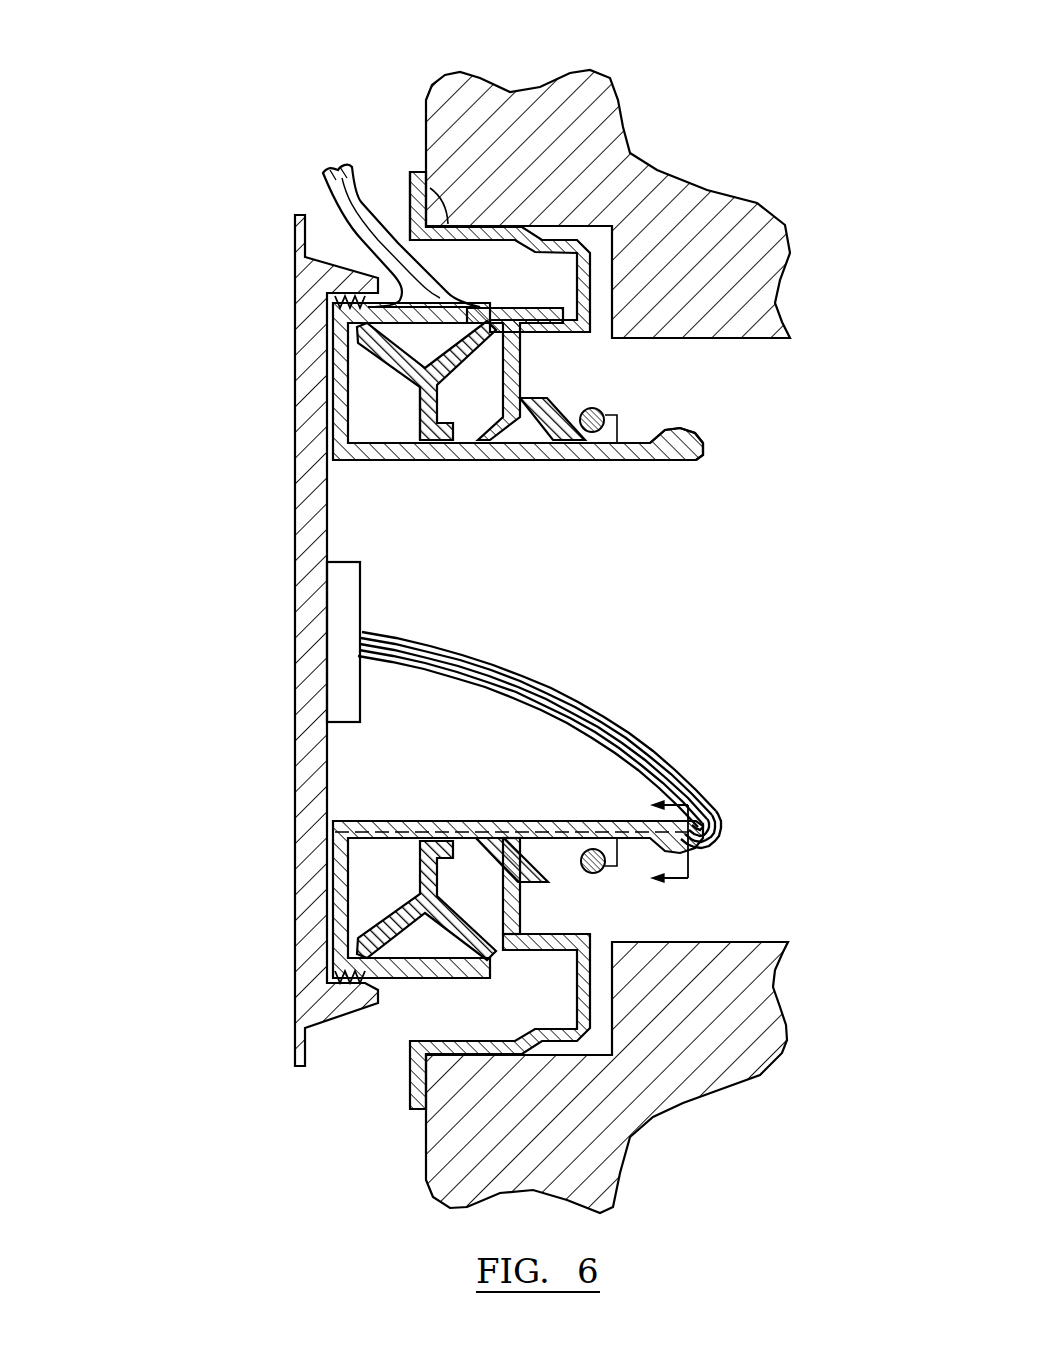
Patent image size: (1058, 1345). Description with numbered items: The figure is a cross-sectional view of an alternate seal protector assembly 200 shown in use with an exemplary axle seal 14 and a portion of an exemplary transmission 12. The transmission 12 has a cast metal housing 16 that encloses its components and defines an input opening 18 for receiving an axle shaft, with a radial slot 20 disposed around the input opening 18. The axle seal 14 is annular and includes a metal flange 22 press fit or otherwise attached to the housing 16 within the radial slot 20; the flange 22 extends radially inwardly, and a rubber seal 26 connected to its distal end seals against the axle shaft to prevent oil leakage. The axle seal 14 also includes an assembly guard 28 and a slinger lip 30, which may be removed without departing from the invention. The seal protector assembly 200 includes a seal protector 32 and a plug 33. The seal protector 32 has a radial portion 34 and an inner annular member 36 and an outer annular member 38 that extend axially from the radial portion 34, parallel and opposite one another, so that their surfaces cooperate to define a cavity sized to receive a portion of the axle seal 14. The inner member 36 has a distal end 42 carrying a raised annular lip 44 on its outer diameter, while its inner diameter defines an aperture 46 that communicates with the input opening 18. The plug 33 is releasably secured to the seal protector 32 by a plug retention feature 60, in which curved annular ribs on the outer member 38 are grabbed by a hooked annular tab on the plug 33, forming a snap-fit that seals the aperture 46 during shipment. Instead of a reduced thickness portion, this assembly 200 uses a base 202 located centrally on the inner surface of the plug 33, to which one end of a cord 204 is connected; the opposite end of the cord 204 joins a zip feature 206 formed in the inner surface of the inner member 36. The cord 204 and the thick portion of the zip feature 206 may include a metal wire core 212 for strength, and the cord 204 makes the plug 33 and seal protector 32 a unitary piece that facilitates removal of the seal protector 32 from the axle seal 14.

The seal protector assembly 200 is at (240, 75).
The transmission 12 is at (746, 100).
The housing 16 is at (672, 171).
The input opening 18 is at (770, 340).
The radial slot 20 is at (603, 342).
The metal flange 22 is at (485, 225).
The plug retention feature 60 is at (332, 252).
The plug 33 is at (292, 287).
The radial portion 34 is at (327, 375).
The outer annular member 38 is at (493, 317).
The slinger lip 30 is at (412, 374).
The assembly guard 28 is at (415, 442).
The inner annular member 36 is at (430, 430).
The rubber seal 26 is at (535, 410).
The axle seal 14 is at (624, 397).
The seal protector 32 is at (544, 465).
The annular lip 44 is at (692, 446).
The aperture 46 is at (651, 456).
The distal end 42 is at (704, 453).
The base 202 is at (362, 580).
The cord 204 is at (597, 717).
The metal wire core 212 is at (641, 768).
The zip feature 206 is at (548, 882).